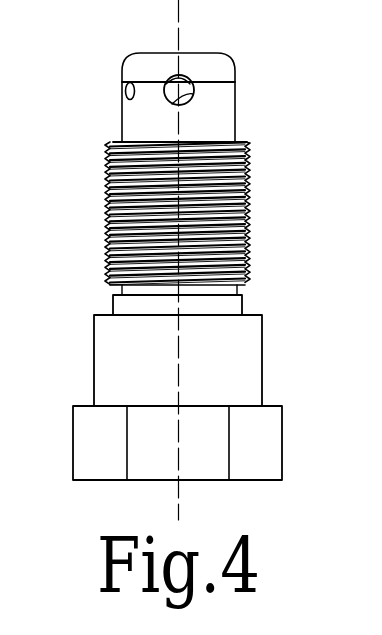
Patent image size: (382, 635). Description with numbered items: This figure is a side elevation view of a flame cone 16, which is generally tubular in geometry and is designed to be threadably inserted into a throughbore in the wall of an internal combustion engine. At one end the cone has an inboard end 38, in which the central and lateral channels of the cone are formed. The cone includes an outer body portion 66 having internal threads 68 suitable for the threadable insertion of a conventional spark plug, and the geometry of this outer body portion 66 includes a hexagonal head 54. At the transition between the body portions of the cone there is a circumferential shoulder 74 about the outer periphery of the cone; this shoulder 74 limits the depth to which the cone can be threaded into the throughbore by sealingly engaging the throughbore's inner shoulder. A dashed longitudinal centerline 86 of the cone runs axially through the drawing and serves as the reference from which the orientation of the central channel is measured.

The fitting assembly 16 is at (262, 195).
The inboard end 38 is at (233, 63).
The hexagonal head 54 is at (283, 441).
The outer body portion 66 is at (102, 366).
The internal threads 68 is at (107, 191).
The circumferential shoulder 74 is at (112, 312).
The longitudinal centerline of the cone 86 is at (179, 23).